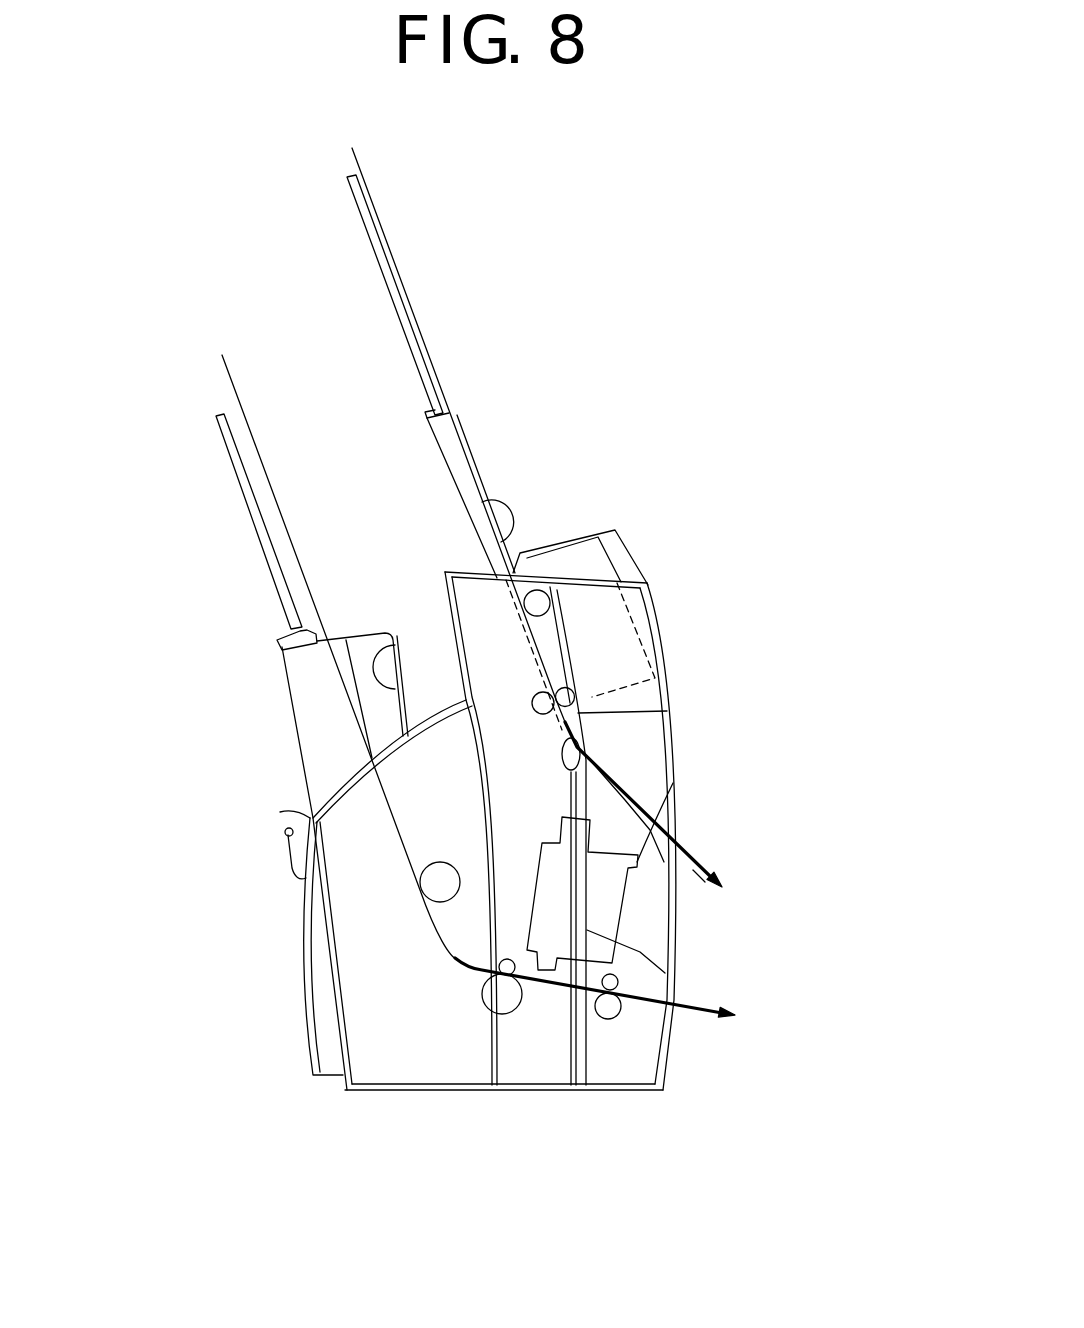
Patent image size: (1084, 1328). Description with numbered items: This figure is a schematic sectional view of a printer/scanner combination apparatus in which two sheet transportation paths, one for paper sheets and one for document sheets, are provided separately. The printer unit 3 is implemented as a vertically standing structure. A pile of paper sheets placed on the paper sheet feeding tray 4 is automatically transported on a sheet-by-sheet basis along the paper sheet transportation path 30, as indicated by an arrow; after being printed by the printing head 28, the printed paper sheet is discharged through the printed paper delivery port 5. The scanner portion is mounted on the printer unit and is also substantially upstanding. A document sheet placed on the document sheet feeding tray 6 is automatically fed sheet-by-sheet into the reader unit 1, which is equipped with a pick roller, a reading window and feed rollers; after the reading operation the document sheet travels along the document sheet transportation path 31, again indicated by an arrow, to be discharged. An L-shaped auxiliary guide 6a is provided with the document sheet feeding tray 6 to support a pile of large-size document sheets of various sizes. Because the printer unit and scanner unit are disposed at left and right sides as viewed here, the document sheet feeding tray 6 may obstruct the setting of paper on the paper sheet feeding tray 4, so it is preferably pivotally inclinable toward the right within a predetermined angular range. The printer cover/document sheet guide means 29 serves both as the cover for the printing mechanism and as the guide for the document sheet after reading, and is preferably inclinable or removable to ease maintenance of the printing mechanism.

The reader unit 1 is at (623, 550).
The printer unit 3 is at (310, 815).
The paper sheet feeding tray 4 is at (273, 587).
The printed paper delivery port 5 is at (648, 995).
The document sheet feeding tray 6 is at (447, 443).
The auxiliary guide 6a is at (370, 217).
The printing head 28 is at (612, 921).
The printer cover/document sheet guide means 29 is at (673, 783).
The paper sheet transportation path 30 is at (725, 1018).
The document sheet transportation path 31 is at (713, 877).